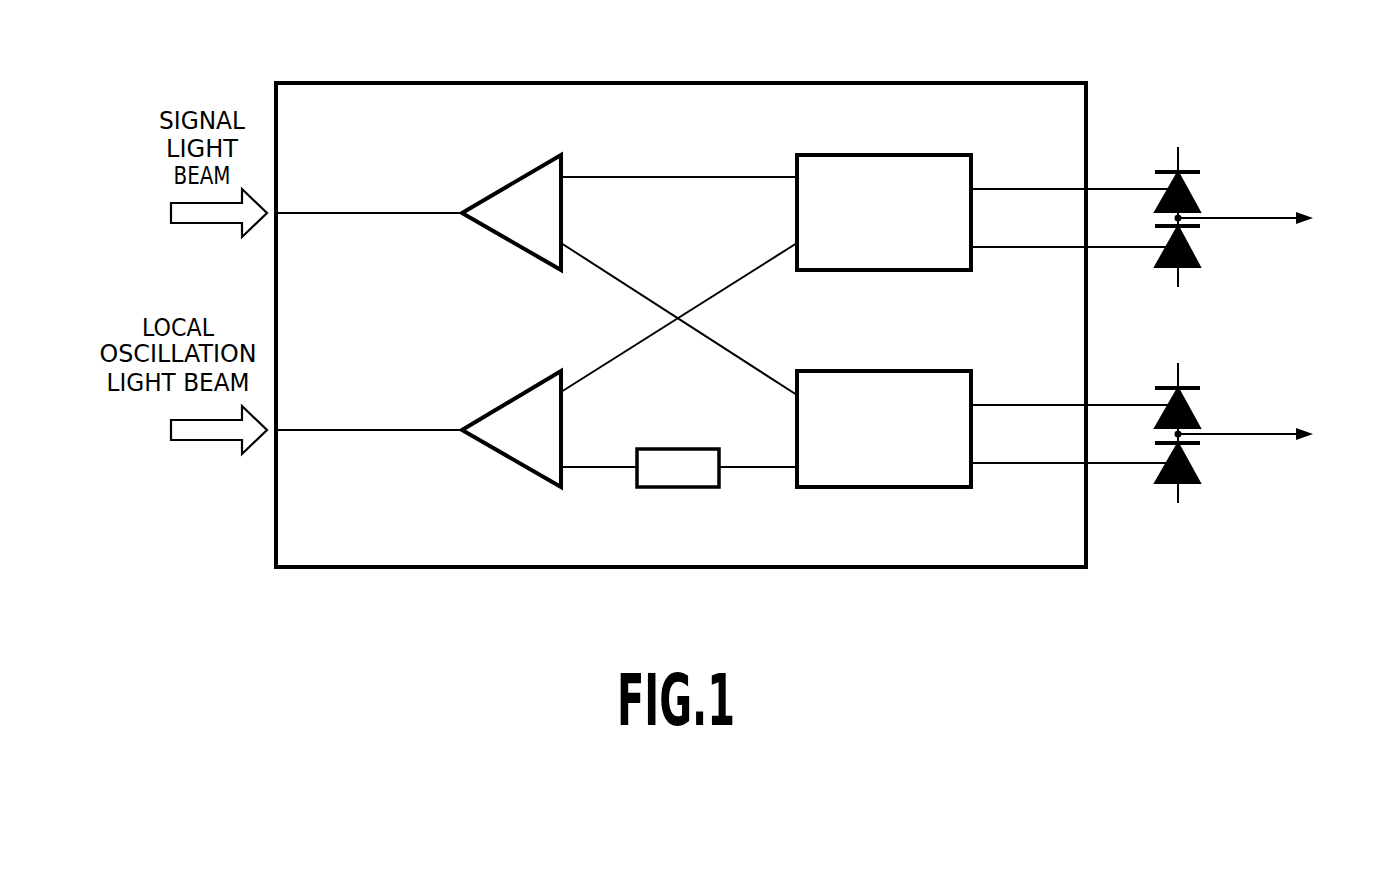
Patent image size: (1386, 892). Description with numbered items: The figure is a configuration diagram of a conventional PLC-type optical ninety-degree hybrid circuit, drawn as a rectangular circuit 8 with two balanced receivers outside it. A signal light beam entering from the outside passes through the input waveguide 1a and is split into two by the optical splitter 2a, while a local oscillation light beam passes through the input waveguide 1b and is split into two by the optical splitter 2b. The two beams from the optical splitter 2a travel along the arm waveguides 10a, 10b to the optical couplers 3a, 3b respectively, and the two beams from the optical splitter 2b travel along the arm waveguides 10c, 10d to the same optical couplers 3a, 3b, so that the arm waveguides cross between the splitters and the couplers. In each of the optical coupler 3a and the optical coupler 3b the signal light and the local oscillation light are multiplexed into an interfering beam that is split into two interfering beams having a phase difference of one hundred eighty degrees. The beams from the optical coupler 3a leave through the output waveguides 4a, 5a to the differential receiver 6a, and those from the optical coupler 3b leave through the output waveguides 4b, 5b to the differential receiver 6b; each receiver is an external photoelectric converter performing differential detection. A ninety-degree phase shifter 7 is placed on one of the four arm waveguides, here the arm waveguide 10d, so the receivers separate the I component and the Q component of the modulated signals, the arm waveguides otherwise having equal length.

The input waveguide 1a is at (343, 213).
The input waveguide 1b is at (343, 431).
The optical splitter 2a is at (504, 187).
The optical splitter 2b is at (504, 405).
The optical coupler 3a is at (880, 155).
The optical coupler 3b is at (880, 371).
The output waveguide 4a is at (1005, 189).
The output waveguide 4b is at (1005, 405).
The output waveguide 5a is at (1005, 248).
The output waveguide 5b is at (1005, 464).
The differential receiver 6a is at (1243, 201).
The differential receiver 6b is at (1246, 417).
The 90-degree phase shifter 7 is at (680, 488).
The optical hybrid circuit 8 is at (697, 83).
The arm waveguide 10a is at (642, 177).
The arm waveguide 10b is at (607, 271).
The arm waveguide 10c is at (608, 363).
The arm waveguide 10d is at (588, 468).